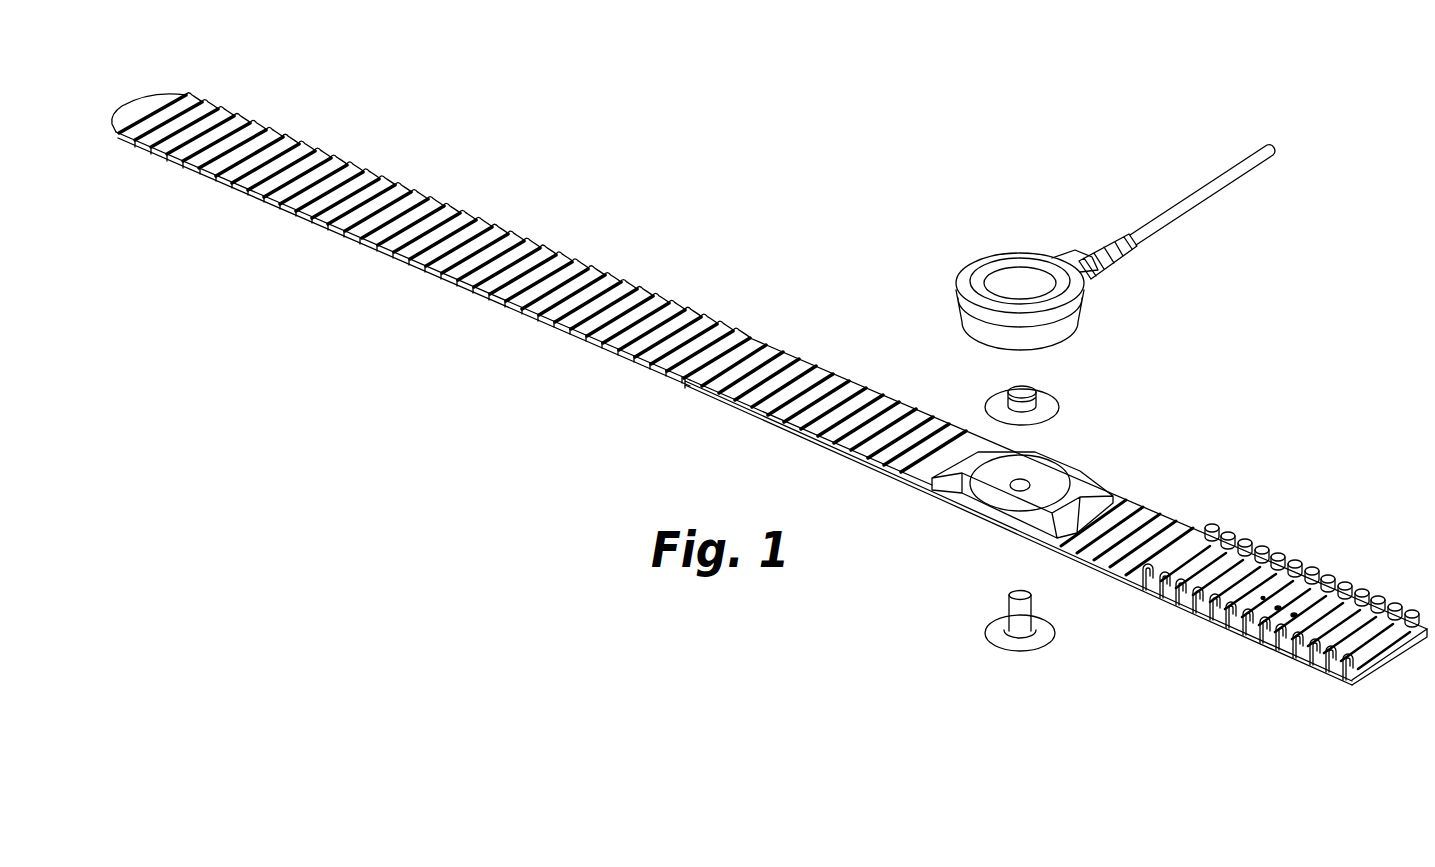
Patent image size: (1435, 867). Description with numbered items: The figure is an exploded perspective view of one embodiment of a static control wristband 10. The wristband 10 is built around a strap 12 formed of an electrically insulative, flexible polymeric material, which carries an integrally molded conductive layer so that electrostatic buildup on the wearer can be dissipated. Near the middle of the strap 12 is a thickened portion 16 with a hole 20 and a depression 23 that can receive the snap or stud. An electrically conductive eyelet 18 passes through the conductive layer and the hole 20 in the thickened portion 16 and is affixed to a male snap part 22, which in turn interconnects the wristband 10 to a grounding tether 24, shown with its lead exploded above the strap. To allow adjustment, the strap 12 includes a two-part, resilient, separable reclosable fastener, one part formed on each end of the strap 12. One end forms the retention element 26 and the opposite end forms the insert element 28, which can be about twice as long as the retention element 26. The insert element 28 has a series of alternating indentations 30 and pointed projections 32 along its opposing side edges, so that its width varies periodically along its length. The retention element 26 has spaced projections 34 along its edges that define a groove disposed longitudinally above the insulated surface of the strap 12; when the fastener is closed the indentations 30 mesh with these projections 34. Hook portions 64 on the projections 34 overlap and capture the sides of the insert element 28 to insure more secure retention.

The static control wristband 10 is at (771, 414).
The strap 12 is at (718, 410).
The thickened portion 16 is at (1055, 504).
The electrically conductive eyelet 18 is at (1018, 617).
The hole 20 is at (1027, 484).
The male snap part 22 is at (1027, 392).
The depression 23 is at (994, 490).
The grounding tether 24 is at (1090, 242).
The retention element 26 is at (1388, 657).
The insert element 28 is at (319, 150).
The indentations 30 is at (337, 236).
The pointed projections 32 is at (440, 207).
The projections 34 is at (1222, 607).
The hook portions 64 is at (1256, 549).